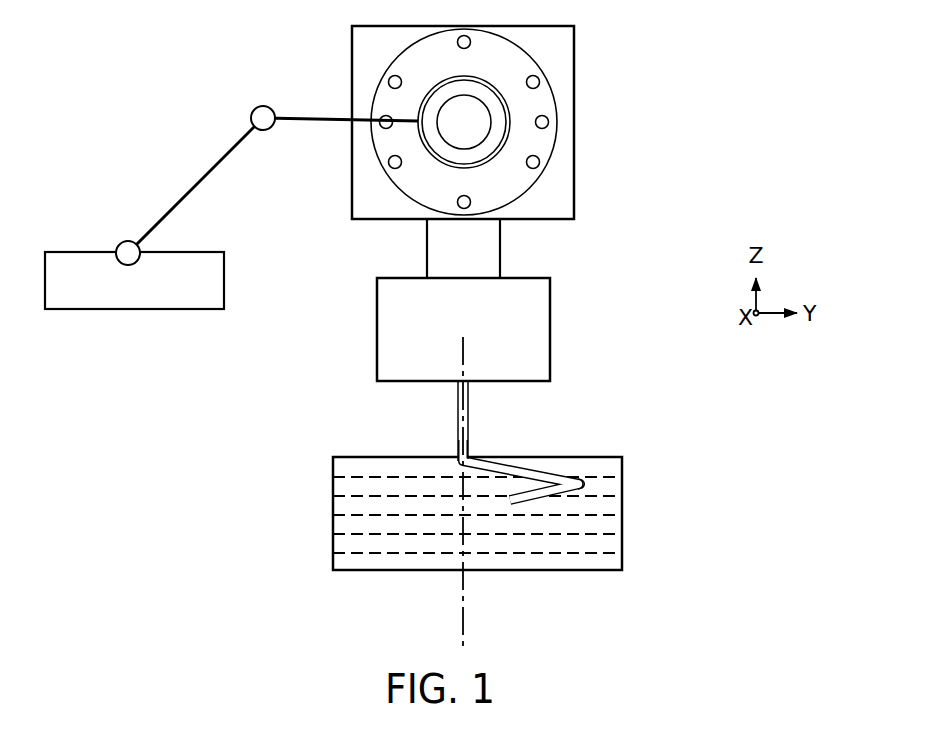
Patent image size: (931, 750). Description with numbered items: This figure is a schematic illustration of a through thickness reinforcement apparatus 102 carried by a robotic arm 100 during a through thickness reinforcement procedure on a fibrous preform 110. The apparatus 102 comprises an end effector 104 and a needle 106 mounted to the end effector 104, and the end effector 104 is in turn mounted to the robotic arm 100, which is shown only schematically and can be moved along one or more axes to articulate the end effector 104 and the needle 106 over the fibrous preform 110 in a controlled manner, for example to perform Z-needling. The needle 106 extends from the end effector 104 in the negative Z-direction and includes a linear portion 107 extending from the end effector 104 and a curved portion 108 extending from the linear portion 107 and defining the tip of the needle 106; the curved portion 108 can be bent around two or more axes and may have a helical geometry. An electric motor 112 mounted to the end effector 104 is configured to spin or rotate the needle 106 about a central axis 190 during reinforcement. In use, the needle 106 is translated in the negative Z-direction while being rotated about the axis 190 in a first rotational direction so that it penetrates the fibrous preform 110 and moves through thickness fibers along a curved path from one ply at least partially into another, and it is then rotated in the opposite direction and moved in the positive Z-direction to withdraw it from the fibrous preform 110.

The robotic arm 100 is at (213, 92).
The through thickness reinforcement apparatus 102 is at (589, 203).
The end effector 104 is at (574, 138).
The needle 106 is at (550, 498).
The linear portion 107 is at (472, 415).
The curved portion 108 is at (590, 485).
The fibrous preform 110 is at (333, 497).
The electric motor 112 is at (533, 308).
The axis 190 is at (464, 605).